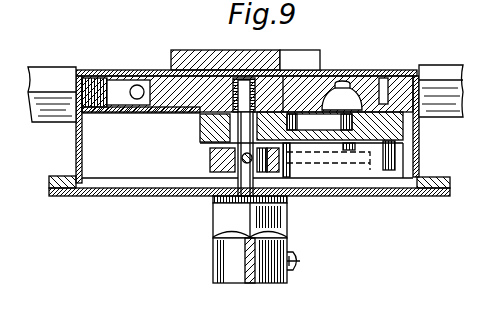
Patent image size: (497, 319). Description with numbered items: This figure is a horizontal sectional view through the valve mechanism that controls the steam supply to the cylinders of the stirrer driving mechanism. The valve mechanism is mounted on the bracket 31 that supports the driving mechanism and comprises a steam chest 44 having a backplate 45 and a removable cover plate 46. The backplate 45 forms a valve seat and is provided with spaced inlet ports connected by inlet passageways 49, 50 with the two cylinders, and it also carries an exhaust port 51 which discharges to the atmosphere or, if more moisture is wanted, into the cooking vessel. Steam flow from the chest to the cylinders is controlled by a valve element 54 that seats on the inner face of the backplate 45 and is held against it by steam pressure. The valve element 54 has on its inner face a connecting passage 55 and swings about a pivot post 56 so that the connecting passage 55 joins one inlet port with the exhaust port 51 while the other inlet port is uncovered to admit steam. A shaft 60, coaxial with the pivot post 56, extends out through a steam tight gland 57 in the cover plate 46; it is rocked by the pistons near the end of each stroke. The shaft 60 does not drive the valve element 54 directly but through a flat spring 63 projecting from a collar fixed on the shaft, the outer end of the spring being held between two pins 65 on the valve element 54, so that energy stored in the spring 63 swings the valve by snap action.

The bracket 31 is at (187, 50).
The steam chest 44 is at (72, 158).
The backplate 45 is at (173, 97).
The cover plate 46 is at (157, 197).
The inlet passageway 49 is at (42, 114).
The inlet passageway 50 is at (438, 72).
The exhaust port 51 is at (297, 70).
The valve element 54 is at (387, 124).
The connecting passage 55 is at (318, 112).
The pivot post 56 is at (231, 127).
The steam tight gland 57 is at (265, 222).
The shaft 60 is at (210, 158).
The flat spring 63 is at (363, 150).
The pins 65 is at (387, 147).